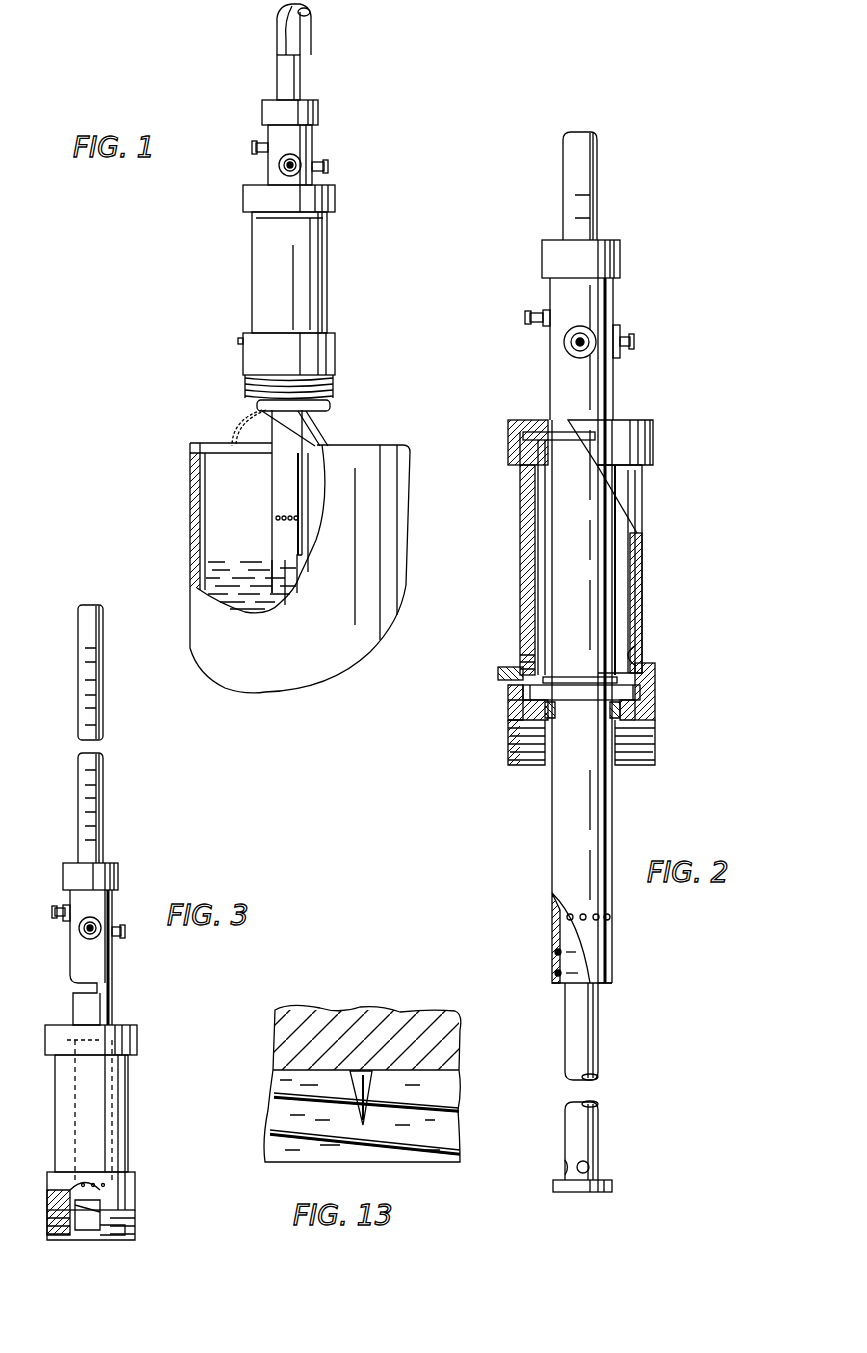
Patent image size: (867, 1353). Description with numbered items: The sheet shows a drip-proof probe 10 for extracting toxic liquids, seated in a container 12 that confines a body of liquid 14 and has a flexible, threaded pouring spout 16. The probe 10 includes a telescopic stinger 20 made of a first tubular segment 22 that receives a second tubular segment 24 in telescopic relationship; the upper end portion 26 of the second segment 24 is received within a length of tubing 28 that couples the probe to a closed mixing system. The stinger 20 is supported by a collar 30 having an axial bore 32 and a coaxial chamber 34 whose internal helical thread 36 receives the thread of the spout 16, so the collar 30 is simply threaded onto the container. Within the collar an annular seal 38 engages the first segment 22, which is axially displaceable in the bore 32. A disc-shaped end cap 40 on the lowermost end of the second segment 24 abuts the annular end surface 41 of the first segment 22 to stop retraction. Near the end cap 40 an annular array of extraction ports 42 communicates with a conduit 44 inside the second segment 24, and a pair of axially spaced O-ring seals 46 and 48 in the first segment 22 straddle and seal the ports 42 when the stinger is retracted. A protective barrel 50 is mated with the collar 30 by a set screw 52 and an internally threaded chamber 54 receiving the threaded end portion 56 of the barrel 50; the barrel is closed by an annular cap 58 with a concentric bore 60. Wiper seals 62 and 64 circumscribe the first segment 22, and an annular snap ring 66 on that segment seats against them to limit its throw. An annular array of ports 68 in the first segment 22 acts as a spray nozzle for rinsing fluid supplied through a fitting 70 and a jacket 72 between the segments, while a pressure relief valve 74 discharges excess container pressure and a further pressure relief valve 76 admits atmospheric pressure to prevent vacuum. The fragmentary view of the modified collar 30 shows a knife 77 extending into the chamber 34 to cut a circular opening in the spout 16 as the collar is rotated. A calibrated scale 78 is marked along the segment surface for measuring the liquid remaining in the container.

In FIG. 1, the probe 10 is at (342, 355).
In FIG. 2, the probe 10 is at (620, 301).
In FIG. 1, the container 12 is at (352, 448).
In FIG. 1, the body of liquid 14 is at (207, 578).
In FIG. 1, the pouring spout 16 is at (310, 424).
In FIG. 2, the telescopic stinger 20 is at (615, 605).
In FIG. 2, the first tubular segment 22 is at (563, 820).
In FIG. 3, the first tubular segment 22 is at (72, 946).
In FIG. 2, the second tubular segment 24 is at (571, 170).
In FIG. 3, the second tubular segment 24 is at (88, 795).
In FIG. 1, the upper end portion 26 is at (288, 75).
In FIG. 2, the upper end portion 26 is at (583, 132).
In FIG. 1, the length of tubing 28 is at (283, 36).
In FIG. 2, the collar 30 is at (657, 700).
In FIG. 3, the collar 30 is at (120, 1197).
In FIG. 13, the collar 30 is at (405, 1028).
In FIG. 2, the bore 32 is at (660, 722).
In FIG. 3, the chamber 34 is at (105, 1228).
In FIG. 2, the helical thread 36 is at (543, 758).
In FIG. 13, the helical thread 36 is at (433, 1107).
In FIG. 2, the annular seal 38 is at (549, 720).
In FIG. 3, the annular seal 38 is at (85, 1215).
In FIG. 2, the end cap 40 is at (555, 1184).
In FIG. 2, the annular end surface 41 is at (604, 985).
In FIG. 2, the extraction ports 42 is at (590, 1167).
In FIG. 2, the conduit 44 is at (576, 1125).
In FIG. 2, the seal 46 is at (555, 975).
In FIG. 2, the seal 48 is at (555, 953).
In FIG. 2, the protective barrel 50 is at (629, 491).
In FIG. 2, the set screw 52 is at (500, 670).
In FIG. 2, the internally threaded chamber 54 is at (641, 645).
In FIG. 2, the threaded end portion 56 is at (527, 665).
In FIG. 2, the annular cap 58 is at (628, 423).
In FIG. 2, the concentric bore 60 is at (550, 415).
In FIG. 2, the seal 62 is at (565, 440).
In FIG. 2, the seal 64 is at (580, 700).
In FIG. 2, the annular snap ring 66 is at (577, 677).
In FIG. 3, the annular snap ring 66 is at (93, 1045).
In FIG. 2, the ports 68 is at (611, 917).
In FIG. 2, the fitting 70 is at (526, 314).
In FIG. 2, the jacket 72 is at (553, 940).
In FIG. 2, the pressure relief valve 74 is at (632, 343).
In FIG. 3, the pressure relief valve 74 is at (120, 936).
In FIG. 2, the pressure relief valve 76 is at (574, 334).
In FIG. 3, the pressure relief valve 76 is at (90, 940).
In FIG. 13, the knife 77 is at (365, 1087).
In FIG. 3, the scale 78 is at (87, 695).